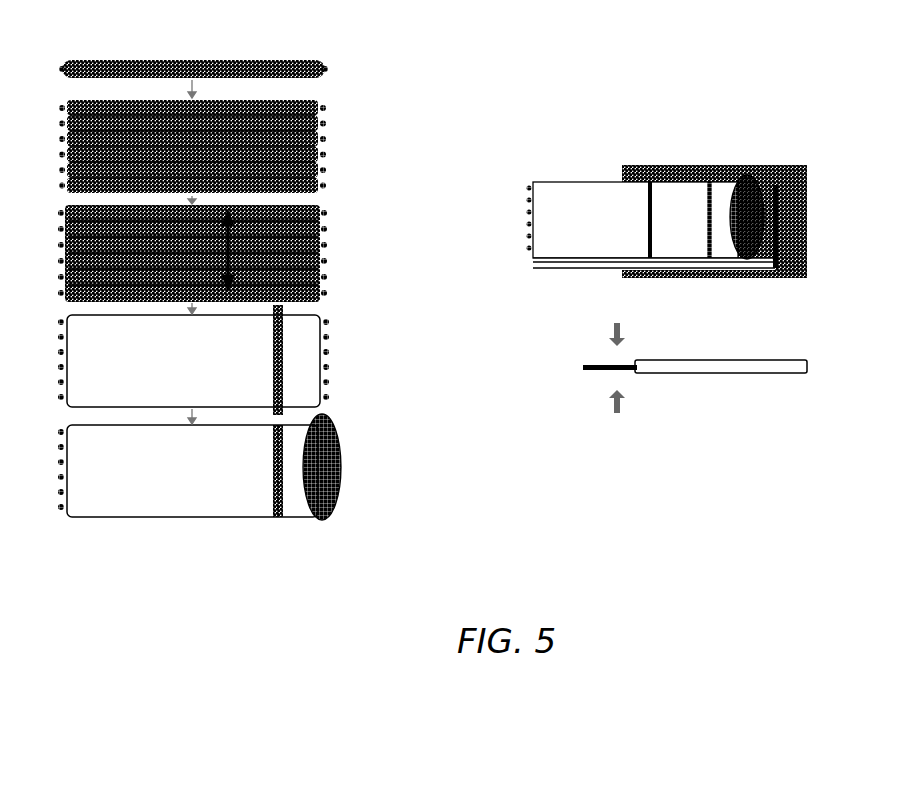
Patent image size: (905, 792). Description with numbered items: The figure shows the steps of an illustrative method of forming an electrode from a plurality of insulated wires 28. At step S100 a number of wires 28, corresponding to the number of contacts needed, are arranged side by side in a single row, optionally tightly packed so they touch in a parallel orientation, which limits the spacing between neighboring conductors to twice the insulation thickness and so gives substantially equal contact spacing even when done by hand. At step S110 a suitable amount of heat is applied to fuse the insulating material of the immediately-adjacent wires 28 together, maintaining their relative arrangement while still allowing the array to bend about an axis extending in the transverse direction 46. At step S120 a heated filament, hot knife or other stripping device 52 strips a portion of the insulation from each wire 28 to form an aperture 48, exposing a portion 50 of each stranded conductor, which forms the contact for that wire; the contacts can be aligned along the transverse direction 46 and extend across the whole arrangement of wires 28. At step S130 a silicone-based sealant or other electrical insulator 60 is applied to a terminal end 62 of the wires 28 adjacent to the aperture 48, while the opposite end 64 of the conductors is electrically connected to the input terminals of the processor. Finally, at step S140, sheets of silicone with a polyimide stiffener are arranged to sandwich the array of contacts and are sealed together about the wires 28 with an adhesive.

The wire 28 is at (112, 105).
The transverse direction 46 is at (225, 243).
The stripping device 52 is at (273, 349).
The terminal end 62 is at (330, 383).
The exposed portion 50 is at (277, 447).
The opposite end 64 is at (62, 516).
The aperture 48 is at (280, 518).
The electrical insulator 60 is at (337, 407).
The wire arranging step S100 is at (237, 104).
The fusing step S110 is at (237, 249).
The stripping step S120 is at (237, 358).
The sealing step S130 is at (230, 491).
The sandwiching step S140 is at (480, 163).